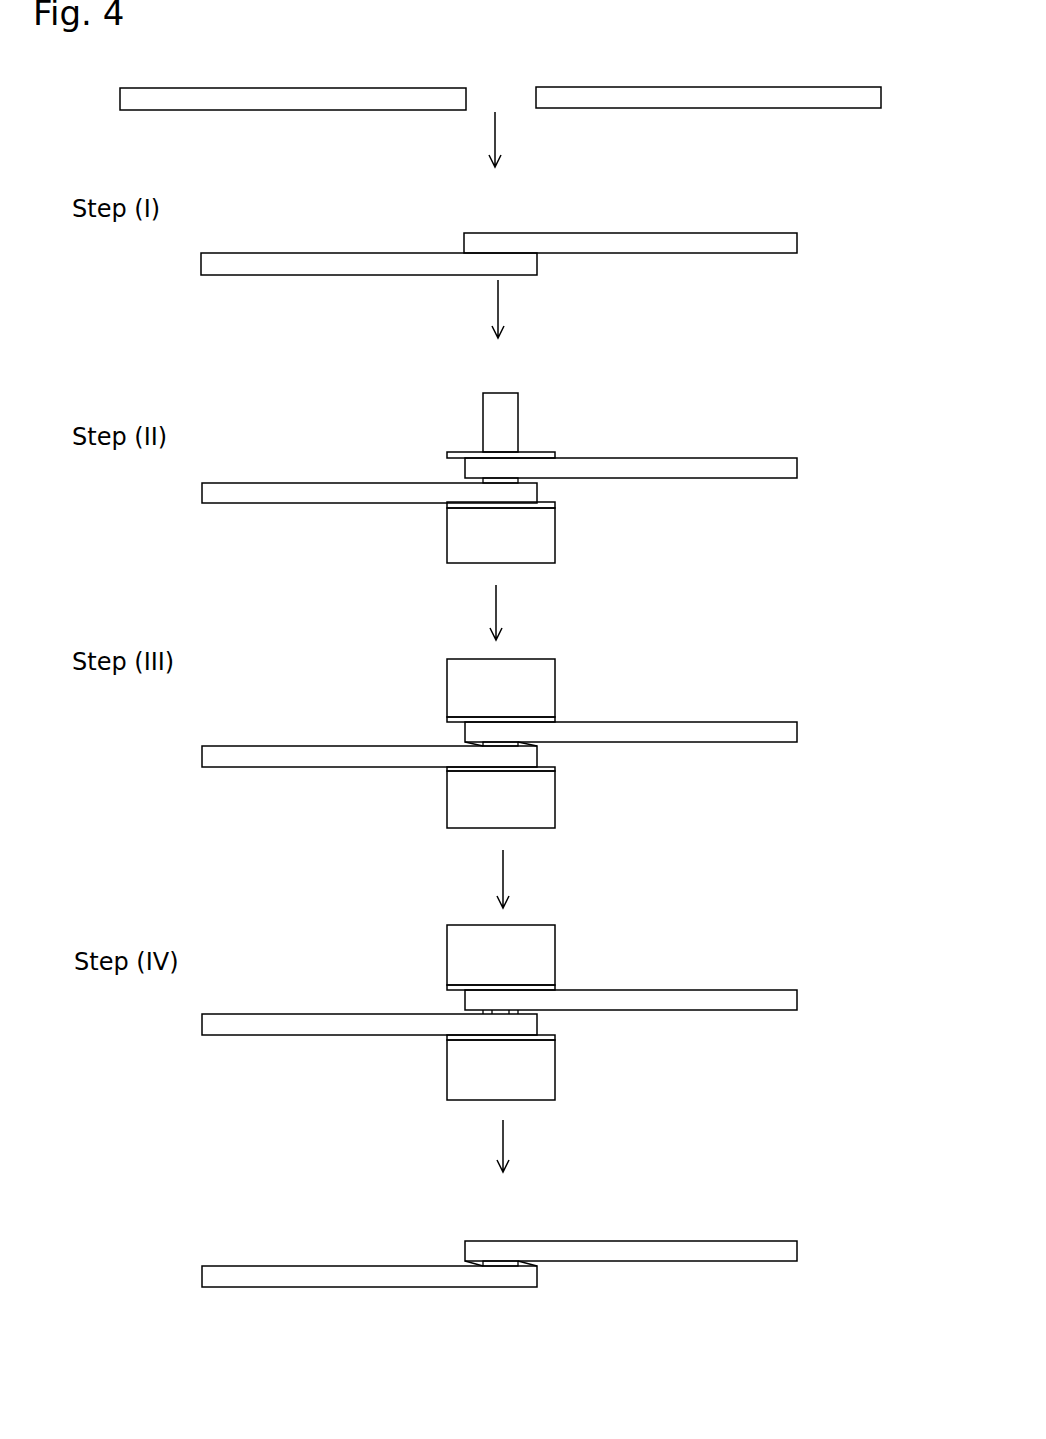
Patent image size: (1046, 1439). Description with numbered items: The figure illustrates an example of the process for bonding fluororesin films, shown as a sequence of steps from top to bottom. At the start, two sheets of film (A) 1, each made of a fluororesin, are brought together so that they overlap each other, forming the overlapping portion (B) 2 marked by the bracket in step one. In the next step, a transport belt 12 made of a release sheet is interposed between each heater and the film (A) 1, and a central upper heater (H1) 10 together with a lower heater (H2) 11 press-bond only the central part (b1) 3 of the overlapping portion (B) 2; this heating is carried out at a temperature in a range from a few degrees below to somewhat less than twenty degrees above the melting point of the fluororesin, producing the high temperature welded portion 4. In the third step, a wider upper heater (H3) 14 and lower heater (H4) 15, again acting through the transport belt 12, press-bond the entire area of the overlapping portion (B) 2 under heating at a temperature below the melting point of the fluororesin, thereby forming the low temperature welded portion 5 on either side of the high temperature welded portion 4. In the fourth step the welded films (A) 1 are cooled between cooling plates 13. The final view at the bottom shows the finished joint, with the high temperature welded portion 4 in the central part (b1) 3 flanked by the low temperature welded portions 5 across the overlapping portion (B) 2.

The film (A) made of a fluororesin 1 is at (305, 97).
The overlapping portion (B) 2 is at (464, 223).
The central part (b1) 3 is at (483, 388).
The high temperature welded portion 4 is at (492, 479).
The low temperature welded portion 5 is at (490, 745).
The central upper heater (H1) 10 is at (502, 420).
The lower heater (H2) 11 is at (480, 527).
The transport belt (release film) 12 is at (522, 455).
The cooling plate 13 is at (508, 967).
The upper heater (H3) 14 is at (510, 685).
The lower heater (H4) 15 is at (480, 792).